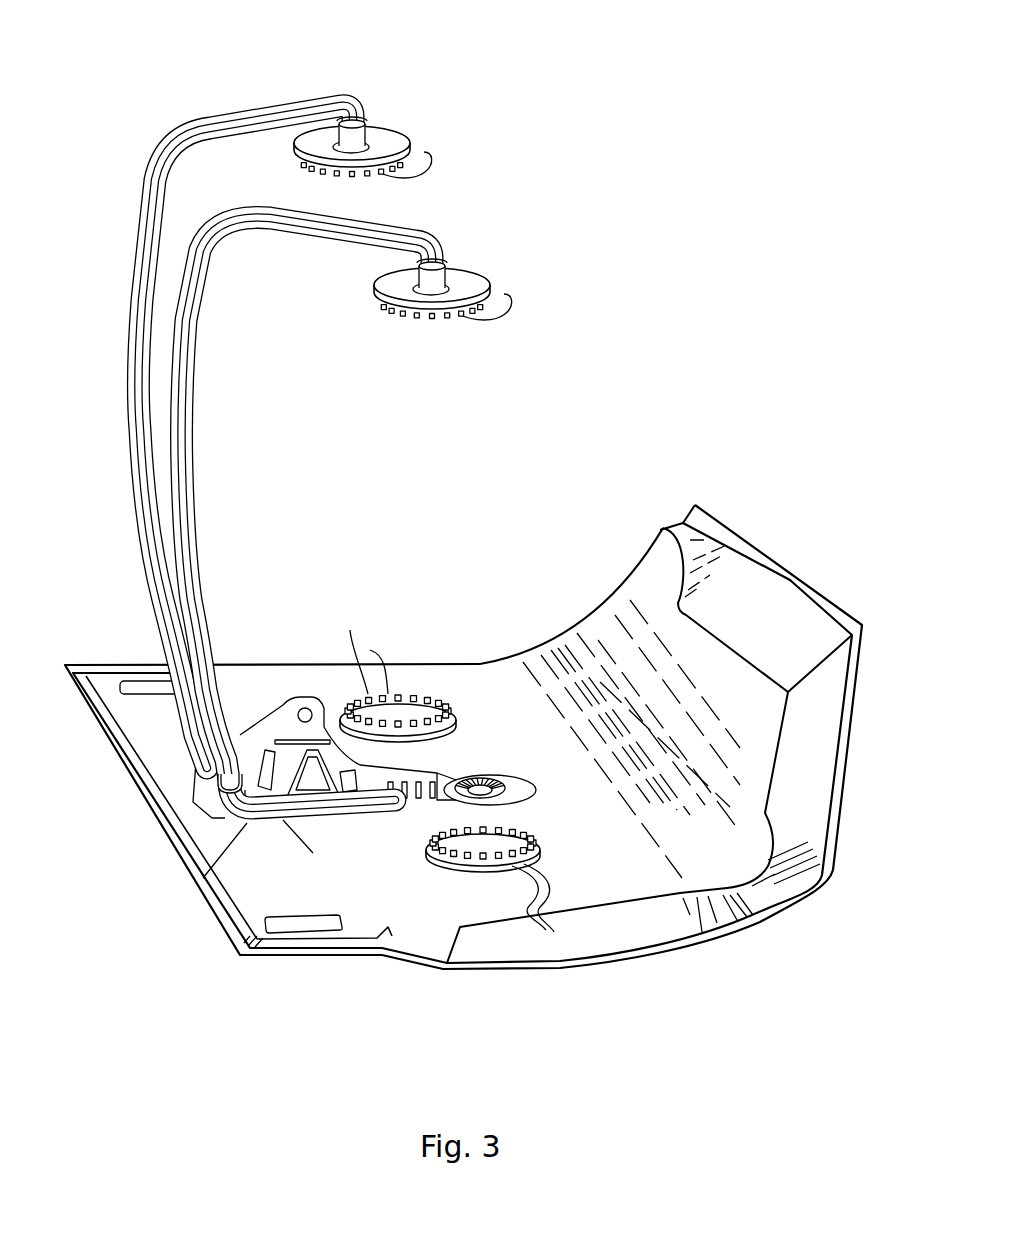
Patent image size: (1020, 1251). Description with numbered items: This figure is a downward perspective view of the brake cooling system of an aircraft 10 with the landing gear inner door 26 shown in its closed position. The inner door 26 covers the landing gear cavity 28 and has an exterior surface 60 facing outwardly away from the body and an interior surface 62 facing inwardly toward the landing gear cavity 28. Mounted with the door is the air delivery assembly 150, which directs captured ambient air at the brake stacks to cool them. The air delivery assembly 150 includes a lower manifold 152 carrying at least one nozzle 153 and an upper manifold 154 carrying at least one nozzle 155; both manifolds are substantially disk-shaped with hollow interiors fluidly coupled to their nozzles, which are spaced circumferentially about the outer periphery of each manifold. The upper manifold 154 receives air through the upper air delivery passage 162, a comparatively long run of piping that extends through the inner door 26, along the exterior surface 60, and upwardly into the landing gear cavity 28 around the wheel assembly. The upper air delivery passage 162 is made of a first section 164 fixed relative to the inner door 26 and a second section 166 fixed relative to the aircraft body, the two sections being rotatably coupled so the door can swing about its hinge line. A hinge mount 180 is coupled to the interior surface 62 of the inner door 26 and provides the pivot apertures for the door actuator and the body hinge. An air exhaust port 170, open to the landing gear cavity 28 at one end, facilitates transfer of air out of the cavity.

The aircraft 10 is at (96, 105).
The inner door 26 is at (463, 751).
The landing gear cavity 28 is at (405, 484).
The exterior surface 60 is at (598, 968).
The interior surface 62 is at (420, 692).
The air delivery assembly 150 is at (158, 797).
The lower manifold 152 is at (450, 804).
The nozzle 153 is at (450, 780).
The upper manifold 154 is at (441, 191).
The nozzle 155 is at (430, 158).
The upper air delivery passage 162 is at (234, 457).
The first section 164 is at (203, 878).
The second section 166 is at (128, 333).
The air exhaust port 170 is at (492, 786).
The hinge mount 180 is at (270, 708).